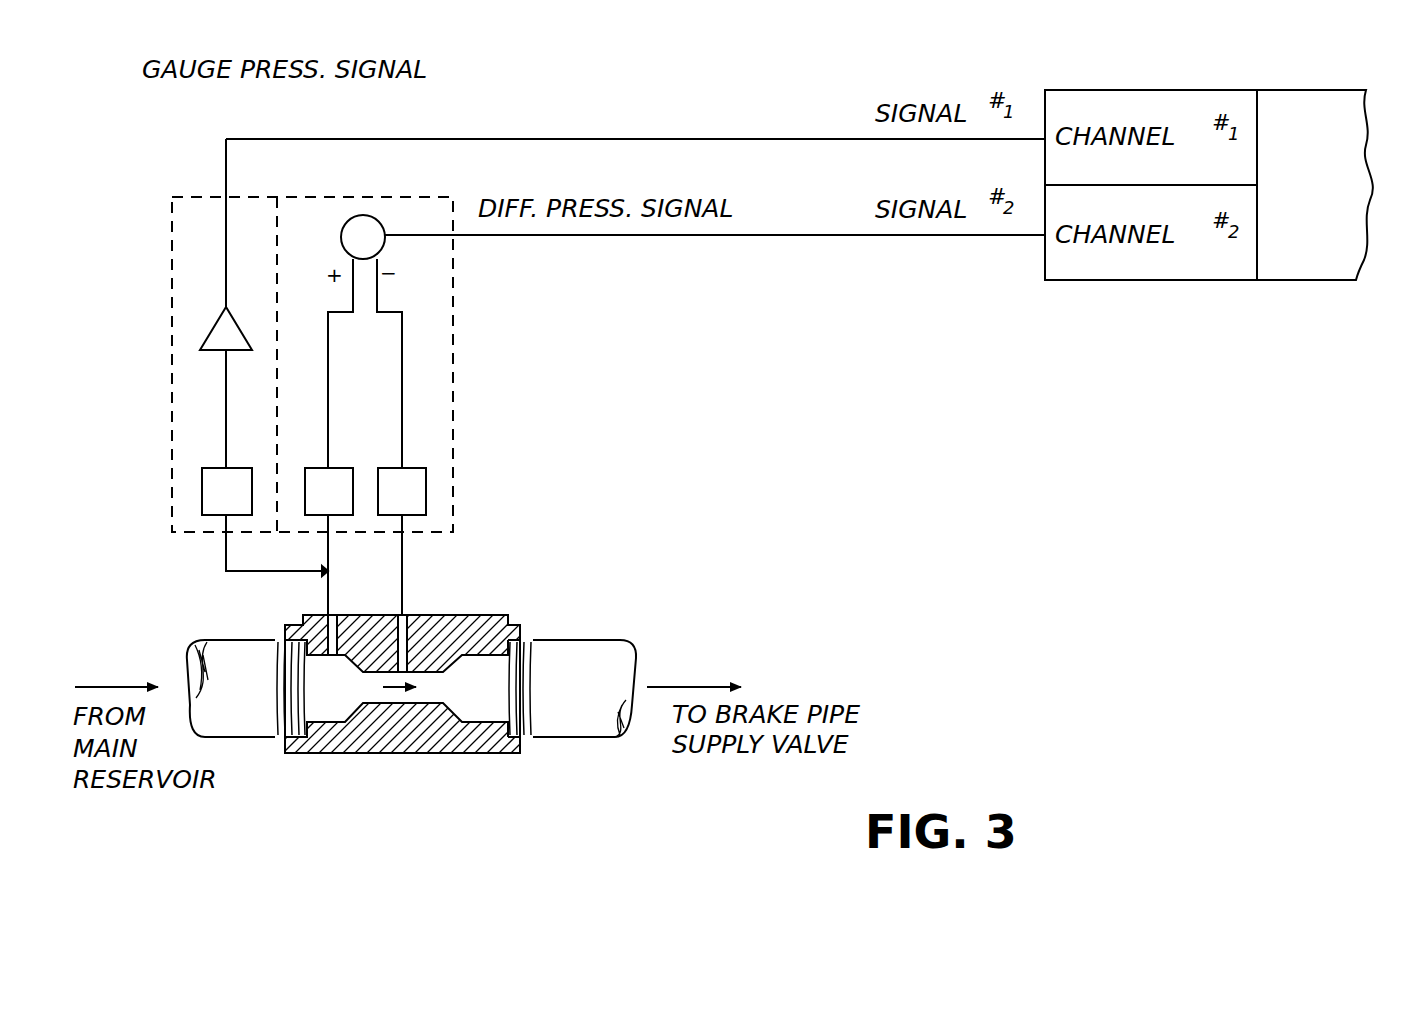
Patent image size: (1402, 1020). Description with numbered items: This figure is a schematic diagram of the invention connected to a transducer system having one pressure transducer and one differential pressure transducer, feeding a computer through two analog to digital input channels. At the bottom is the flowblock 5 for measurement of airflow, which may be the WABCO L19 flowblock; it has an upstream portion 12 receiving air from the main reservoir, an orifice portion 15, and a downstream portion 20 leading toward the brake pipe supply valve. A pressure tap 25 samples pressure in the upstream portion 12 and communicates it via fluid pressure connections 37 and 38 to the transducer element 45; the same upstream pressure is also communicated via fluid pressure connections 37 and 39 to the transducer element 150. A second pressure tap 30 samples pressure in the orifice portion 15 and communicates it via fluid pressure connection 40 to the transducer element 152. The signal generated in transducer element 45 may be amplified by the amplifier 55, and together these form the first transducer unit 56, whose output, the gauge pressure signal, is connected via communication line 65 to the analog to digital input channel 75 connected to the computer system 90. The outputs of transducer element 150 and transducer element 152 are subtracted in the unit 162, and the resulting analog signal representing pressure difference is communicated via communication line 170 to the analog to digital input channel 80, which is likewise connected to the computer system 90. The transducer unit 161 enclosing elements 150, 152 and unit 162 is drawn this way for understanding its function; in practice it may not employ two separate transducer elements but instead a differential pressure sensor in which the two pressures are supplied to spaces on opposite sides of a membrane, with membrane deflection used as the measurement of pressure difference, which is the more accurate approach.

The flowblock 5 is at (298, 758).
The upstream portion 12 is at (312, 687).
The orifice portion 15 is at (383, 675).
The downstream portion 20 is at (500, 687).
The pressure tap 25 is at (326, 620).
The pressure tap 30 is at (414, 625).
The fluid pressure connection 37 is at (328, 590).
The fluid pressure connection 38 is at (226, 553).
The fluid pressure connection 39 is at (328, 553).
The fluid pressure connection 40 is at (405, 561).
The transducer element 45 is at (202, 491).
The amplifier 55 is at (208, 332).
The first transducer unit 56 is at (197, 197).
The communication line 65 is at (663, 138).
The analog to digital input channel 75 is at (1157, 90).
The analog to digital input channel 80 is at (1156, 280).
The computer system 90 is at (1313, 278).
The transducer element 150 is at (340, 468).
The transducer element 152 is at (427, 491).
The transducer unit 161 is at (387, 197).
The unit 162 is at (351, 217).
The communication line 170 is at (736, 240).